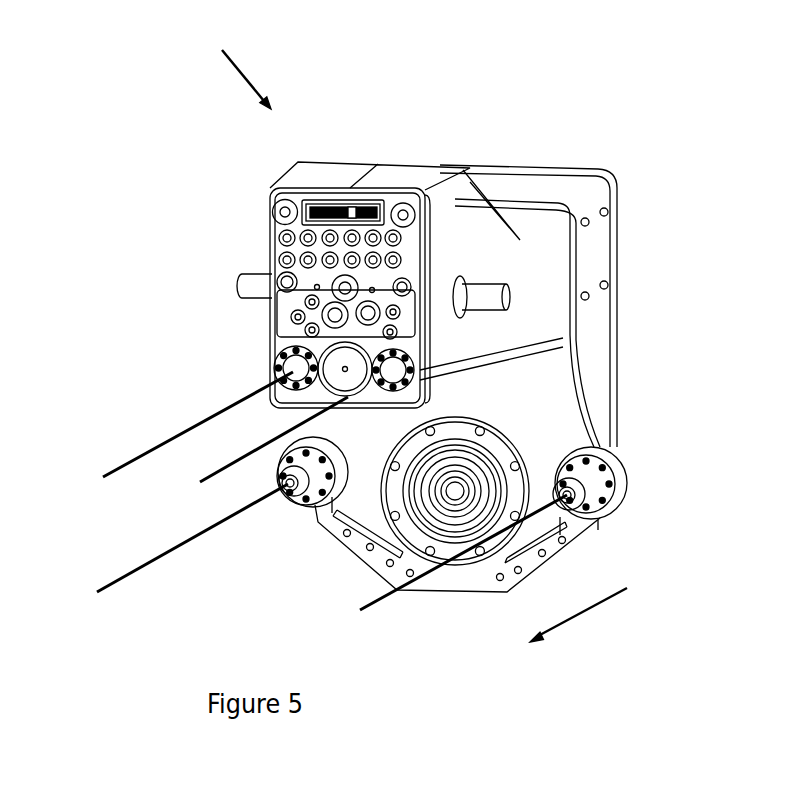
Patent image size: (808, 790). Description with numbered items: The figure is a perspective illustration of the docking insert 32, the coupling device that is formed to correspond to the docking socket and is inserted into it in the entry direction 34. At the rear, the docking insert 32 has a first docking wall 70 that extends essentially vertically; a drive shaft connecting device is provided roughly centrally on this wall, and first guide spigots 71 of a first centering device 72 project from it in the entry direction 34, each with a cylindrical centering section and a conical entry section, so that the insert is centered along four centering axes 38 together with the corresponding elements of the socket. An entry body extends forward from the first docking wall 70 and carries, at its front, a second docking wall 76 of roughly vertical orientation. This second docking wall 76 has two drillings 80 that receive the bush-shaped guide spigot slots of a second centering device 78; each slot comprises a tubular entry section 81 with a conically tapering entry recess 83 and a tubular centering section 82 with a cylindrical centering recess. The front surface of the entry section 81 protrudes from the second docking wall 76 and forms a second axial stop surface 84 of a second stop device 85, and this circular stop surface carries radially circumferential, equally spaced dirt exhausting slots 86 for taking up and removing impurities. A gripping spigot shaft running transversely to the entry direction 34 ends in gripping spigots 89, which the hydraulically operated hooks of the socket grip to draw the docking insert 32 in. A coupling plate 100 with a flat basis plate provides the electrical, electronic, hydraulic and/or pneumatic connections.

The docking insert 32 is at (234, 69).
The entry direction 34 is at (578, 615).
The centering axes 38 is at (245, 453).
The first docking wall 70 is at (502, 346).
The first guide spigots 71 is at (421, 449).
The first centering device 72 is at (421, 449).
The second docking wall 76 is at (372, 393).
The second centering device 78 is at (610, 480).
The drillings 80 is at (426, 316).
The entry section 81 is at (426, 316).
The centering section 82 is at (426, 316).
The entry recess 83 is at (426, 316).
The second axial stop surface 84 is at (426, 316).
The second stop device 85 is at (426, 316).
The dirt exhausting slots 86 is at (660, 369).
The gripping spigots 89 is at (490, 283).
The coupling plate 100 is at (387, 197).